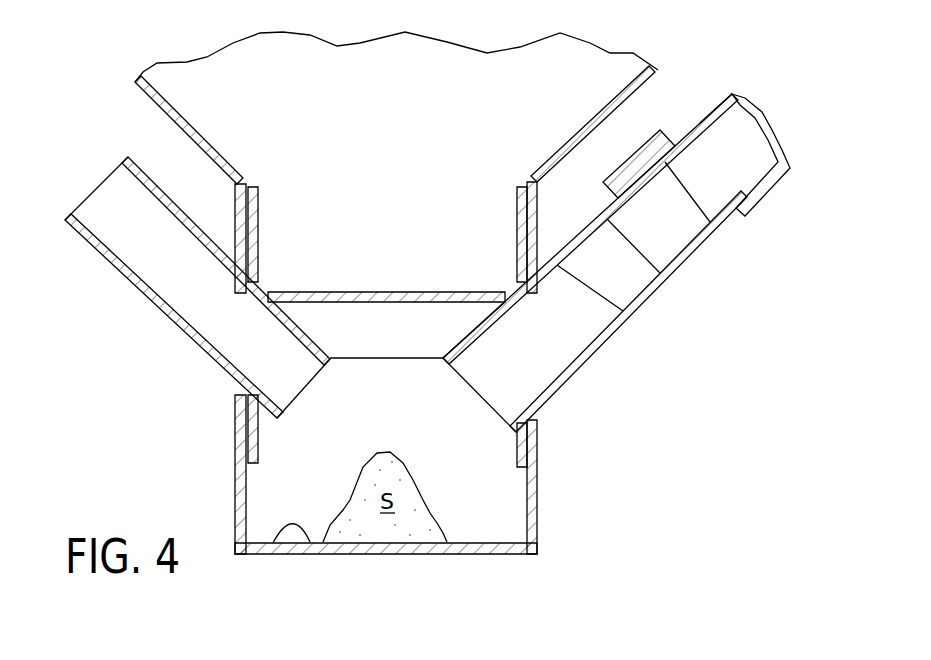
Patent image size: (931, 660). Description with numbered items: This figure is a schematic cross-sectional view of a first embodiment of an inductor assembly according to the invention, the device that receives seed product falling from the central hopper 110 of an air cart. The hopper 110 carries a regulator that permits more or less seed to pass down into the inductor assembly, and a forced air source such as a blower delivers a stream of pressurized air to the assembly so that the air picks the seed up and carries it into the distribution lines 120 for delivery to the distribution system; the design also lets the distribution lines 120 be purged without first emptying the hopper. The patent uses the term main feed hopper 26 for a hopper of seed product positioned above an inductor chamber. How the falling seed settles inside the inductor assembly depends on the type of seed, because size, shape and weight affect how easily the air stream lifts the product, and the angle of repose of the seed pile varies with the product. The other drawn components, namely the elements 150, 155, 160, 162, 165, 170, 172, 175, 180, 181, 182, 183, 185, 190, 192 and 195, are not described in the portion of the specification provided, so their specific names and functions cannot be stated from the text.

The main feed hopper 26 is at (632, 102).
The central hopper 110 is at (157, 105).
The distribution lines 120 is at (735, 100).
The container 150 is at (418, 506).
The left side wall 155 is at (235, 500).
The right side wall 160 is at (537, 537).
The junction opening 162 is at (408, 357).
The bottom wall 165 is at (392, 555).
The inner wall lip 170 is at (477, 465).
The deposited material 172 is at (282, 532).
The first pipe 175 is at (203, 274).
The second pipe 180 is at (656, 228).
The first pipe inlet end 181 is at (97, 192).
The first pipe outlet end 182 is at (300, 390).
The top plate 183 is at (327, 293).
The plate opening 185 is at (472, 330).
The collar 190 is at (683, 258).
The end cap 192 is at (743, 230).
The inner sleeve 195 is at (573, 230).